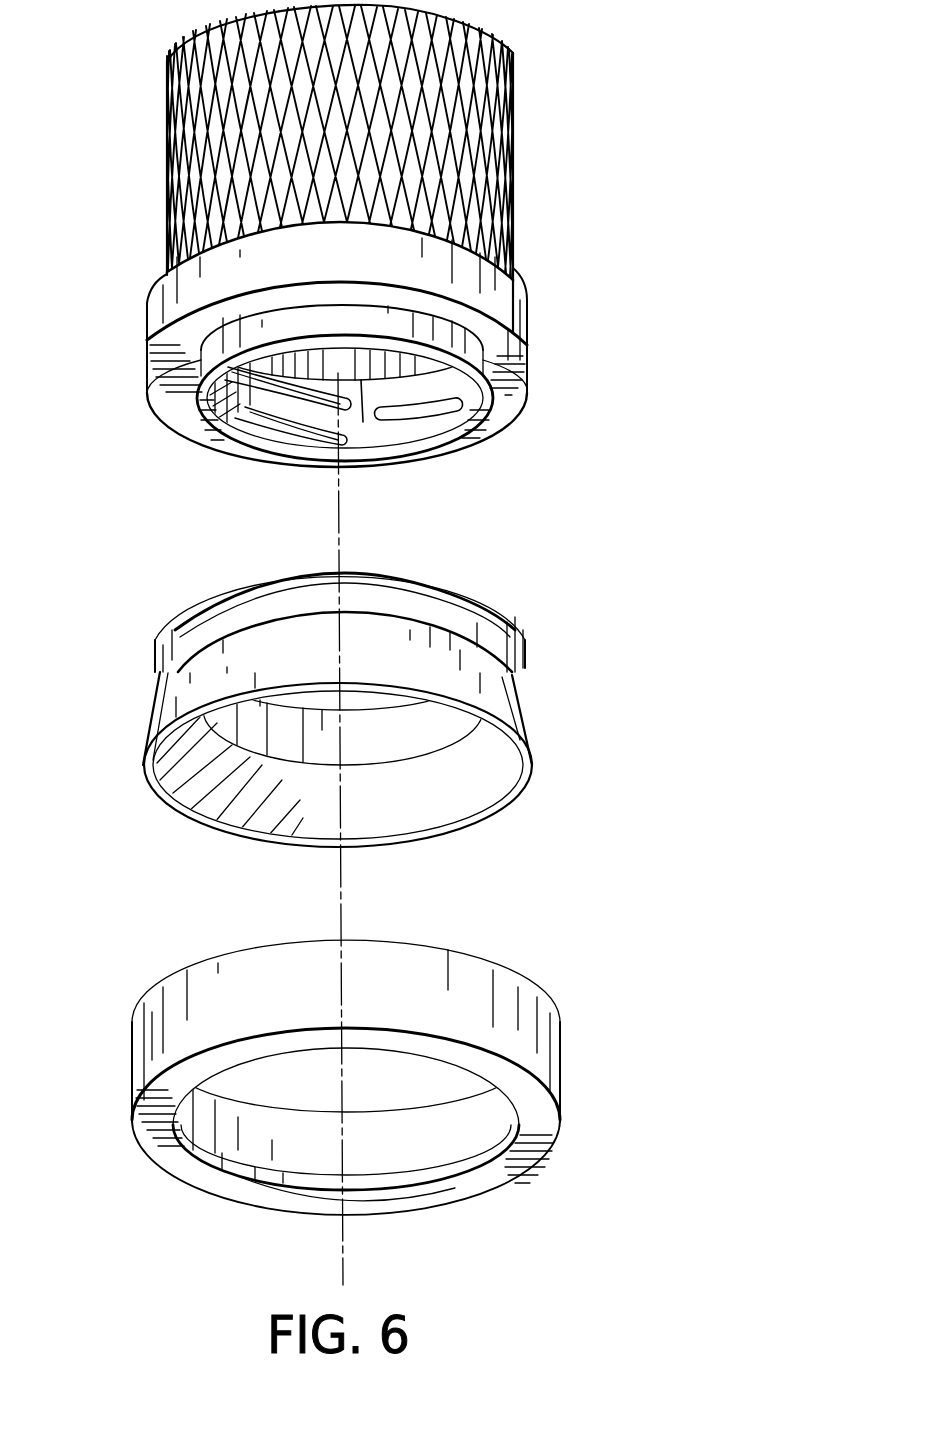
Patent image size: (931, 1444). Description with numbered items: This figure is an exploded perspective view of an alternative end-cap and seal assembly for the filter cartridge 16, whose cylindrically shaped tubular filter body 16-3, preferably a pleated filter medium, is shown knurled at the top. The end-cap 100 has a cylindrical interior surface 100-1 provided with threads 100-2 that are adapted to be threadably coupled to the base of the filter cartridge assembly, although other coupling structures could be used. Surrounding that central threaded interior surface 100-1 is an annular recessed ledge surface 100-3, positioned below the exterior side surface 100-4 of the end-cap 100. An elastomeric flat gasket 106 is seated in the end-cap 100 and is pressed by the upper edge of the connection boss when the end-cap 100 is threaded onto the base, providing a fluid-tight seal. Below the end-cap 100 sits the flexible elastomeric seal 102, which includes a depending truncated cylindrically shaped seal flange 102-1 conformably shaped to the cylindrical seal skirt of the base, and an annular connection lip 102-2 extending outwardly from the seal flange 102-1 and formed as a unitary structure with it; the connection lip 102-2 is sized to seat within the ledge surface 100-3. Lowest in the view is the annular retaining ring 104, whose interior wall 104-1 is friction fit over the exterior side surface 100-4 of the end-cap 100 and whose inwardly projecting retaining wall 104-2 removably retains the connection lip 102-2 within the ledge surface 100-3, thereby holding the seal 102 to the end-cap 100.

The filter cartridge 16 is at (415, 168).
The filter body 16-3 is at (370, 116).
The end-cap 100 is at (375, 372).
The cylindrical interior surface 100-1 is at (385, 433).
The threads 100-2 is at (312, 405).
The annular recessed ledge surface 100-3 is at (500, 387).
The exterior side surface 100-4 is at (372, 272).
The elastomeric flat gasket 106 is at (363, 422).
The seal 102 is at (440, 710).
The seal flange 102-1 is at (428, 811).
The annular connection lip 102-2 is at (517, 628).
The annular retaining ring 104 is at (373, 1092).
The interior wall 104-1 is at (364, 1006).
The retaining wall 104-2 is at (245, 1190).